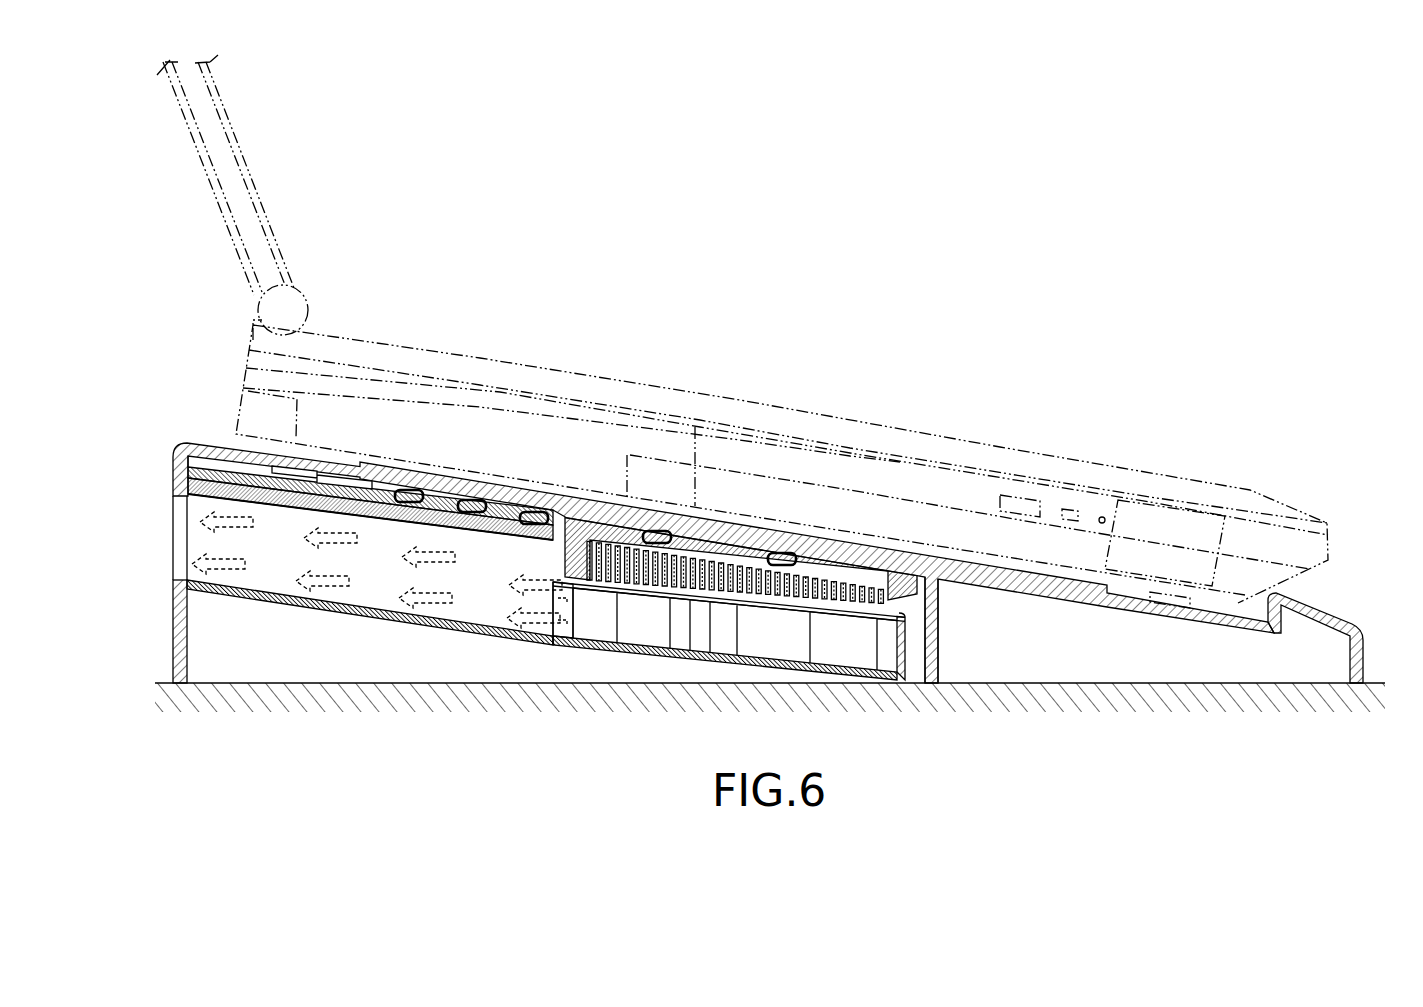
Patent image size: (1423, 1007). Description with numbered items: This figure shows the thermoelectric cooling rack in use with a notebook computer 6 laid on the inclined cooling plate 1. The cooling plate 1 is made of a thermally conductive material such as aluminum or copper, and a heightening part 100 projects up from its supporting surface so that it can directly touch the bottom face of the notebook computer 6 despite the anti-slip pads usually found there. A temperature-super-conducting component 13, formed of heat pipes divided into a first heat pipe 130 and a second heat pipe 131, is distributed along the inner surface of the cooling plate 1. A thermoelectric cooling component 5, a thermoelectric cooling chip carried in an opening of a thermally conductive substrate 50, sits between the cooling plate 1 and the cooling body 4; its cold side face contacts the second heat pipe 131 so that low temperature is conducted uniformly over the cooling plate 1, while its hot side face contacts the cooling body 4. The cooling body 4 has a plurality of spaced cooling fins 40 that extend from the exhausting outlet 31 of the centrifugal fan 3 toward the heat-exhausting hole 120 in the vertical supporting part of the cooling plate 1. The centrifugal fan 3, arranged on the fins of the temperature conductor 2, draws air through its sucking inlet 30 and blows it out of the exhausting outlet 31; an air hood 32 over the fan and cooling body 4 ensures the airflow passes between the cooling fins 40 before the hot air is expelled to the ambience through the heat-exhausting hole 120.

The cooling plate 1 is at (1331, 594).
The temperature conductor 2 is at (900, 599).
The centrifugal fan 3 is at (857, 637).
The sucking inlet 30 is at (752, 603).
The exhausting outlet 31 is at (550, 597).
The air hood 32 is at (363, 613).
The cooling fins 40 is at (273, 567).
The substrate 50 is at (228, 474).
The thermoelectric cooling component 5 is at (458, 490).
The notebook computer 6 is at (888, 430).
The temperature-super-conducting component 13 is at (694, 442).
The first heat pipe 130 is at (658, 517).
The second heat pipe 131 is at (476, 503).
The heightening part 100 is at (1070, 575).
The heat-exhausting hole 120 is at (181, 536).
The cooling body 4 is at (176, 502).